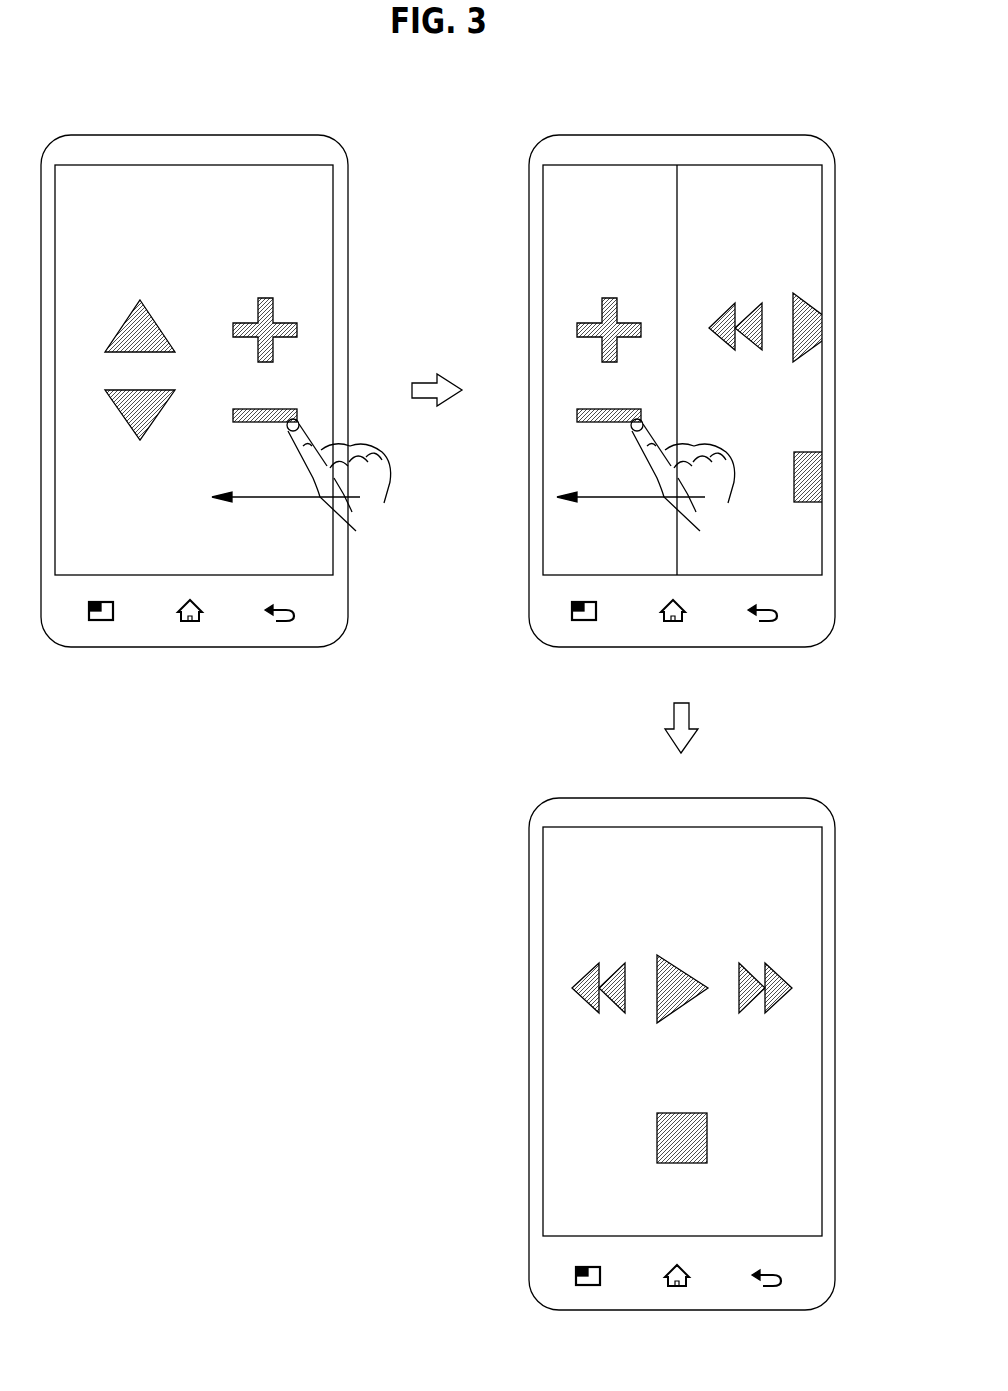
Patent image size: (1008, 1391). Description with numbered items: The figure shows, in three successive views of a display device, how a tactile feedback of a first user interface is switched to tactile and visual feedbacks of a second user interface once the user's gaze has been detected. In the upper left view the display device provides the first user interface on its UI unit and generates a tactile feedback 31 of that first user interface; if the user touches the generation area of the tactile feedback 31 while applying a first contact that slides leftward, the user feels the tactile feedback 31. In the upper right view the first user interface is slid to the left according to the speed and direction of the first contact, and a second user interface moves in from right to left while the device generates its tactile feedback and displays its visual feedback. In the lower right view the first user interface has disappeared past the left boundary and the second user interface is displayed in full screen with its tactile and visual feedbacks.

The tactile feedback 31 is at (297, 330).